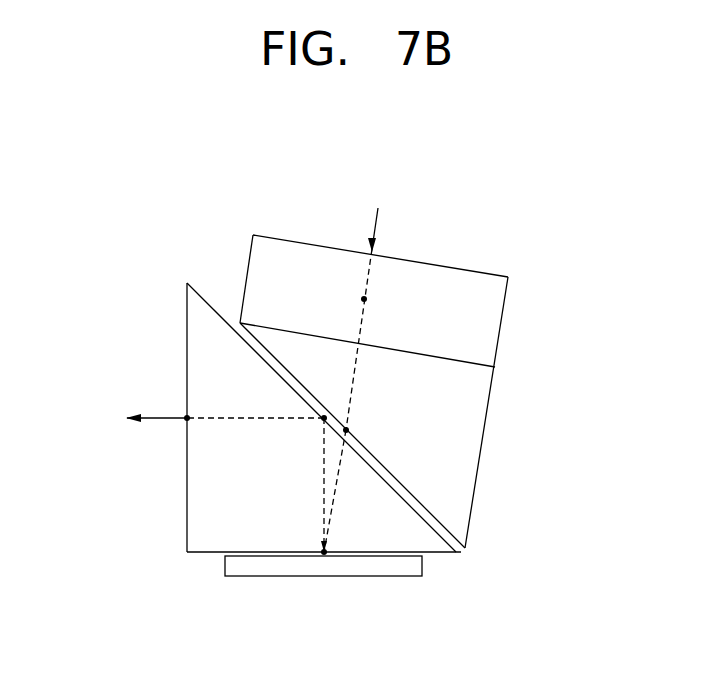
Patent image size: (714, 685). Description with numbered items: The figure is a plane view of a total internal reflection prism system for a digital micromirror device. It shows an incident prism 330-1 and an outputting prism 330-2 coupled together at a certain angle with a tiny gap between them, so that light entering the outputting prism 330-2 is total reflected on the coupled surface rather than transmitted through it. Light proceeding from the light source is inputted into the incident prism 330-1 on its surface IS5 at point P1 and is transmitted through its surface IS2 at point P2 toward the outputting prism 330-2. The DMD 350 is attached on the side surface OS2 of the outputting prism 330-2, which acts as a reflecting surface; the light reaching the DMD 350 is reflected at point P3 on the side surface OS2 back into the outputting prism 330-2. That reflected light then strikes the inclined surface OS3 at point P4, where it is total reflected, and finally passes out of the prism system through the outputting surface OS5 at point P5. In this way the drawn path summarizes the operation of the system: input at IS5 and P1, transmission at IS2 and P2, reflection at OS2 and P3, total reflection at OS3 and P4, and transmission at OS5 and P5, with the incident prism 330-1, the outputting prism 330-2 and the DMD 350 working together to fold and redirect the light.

The incident prism 330-1 is at (395, 363).
The outputting prism 330-2 is at (284, 435).
The DMD 350 is at (248, 568).
The incident surface of incident prism IS5 is at (270, 252).
The transmitting surface of incident prism IS2 is at (418, 495).
The outputting surface OS5 is at (186, 328).
The inclined surface of outputting prism OS3 is at (245, 345).
The side surface of outputting prism OS2 is at (445, 553).
The input point P1 is at (367, 299).
The transmission point P2 is at (348, 429).
The reflection point P3 is at (344, 535).
The total reflection point P4 is at (324, 419).
The output point P5 is at (189, 420).